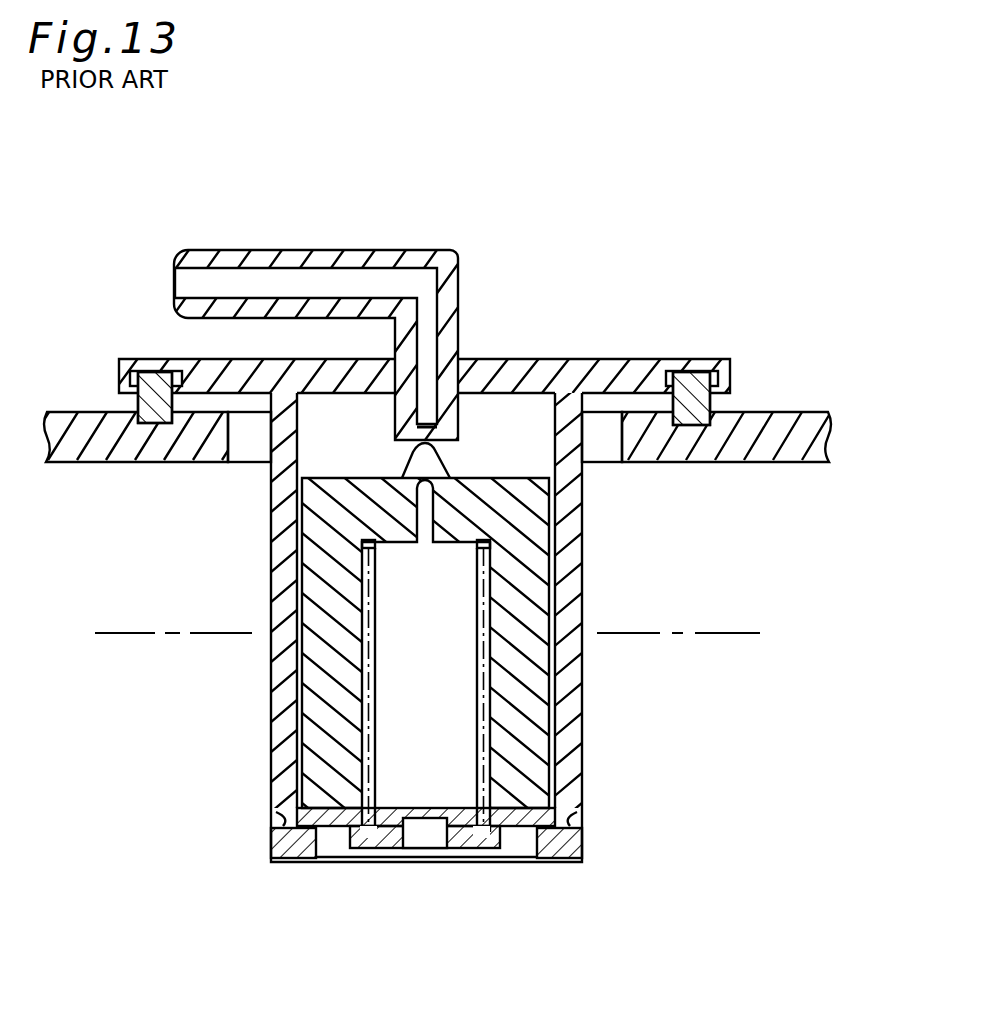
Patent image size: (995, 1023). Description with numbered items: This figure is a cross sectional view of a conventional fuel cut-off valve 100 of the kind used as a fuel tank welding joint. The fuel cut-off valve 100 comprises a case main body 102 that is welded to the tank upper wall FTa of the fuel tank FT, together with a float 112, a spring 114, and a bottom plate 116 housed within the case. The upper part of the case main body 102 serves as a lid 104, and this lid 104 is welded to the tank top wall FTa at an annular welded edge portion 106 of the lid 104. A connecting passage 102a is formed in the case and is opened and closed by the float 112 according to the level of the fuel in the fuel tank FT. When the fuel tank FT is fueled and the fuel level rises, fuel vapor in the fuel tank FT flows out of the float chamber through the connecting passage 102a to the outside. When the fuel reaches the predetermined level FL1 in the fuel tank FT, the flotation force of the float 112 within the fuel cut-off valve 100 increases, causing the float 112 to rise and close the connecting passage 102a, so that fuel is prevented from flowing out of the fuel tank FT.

The fuel cut-off valve 100 is at (650, 243).
The case main body 102 is at (579, 533).
The connecting passage 102a is at (459, 357).
The lid 104 is at (580, 370).
The annular welded edge portion 106 is at (718, 403).
The float 112 is at (541, 713).
The spring 114 is at (560, 775).
The bottom plate 116 is at (556, 840).
The predetermined level FL1 is at (722, 633).
The tank upper wall FTa is at (760, 413).
The fuel tank FT is at (456, 419).